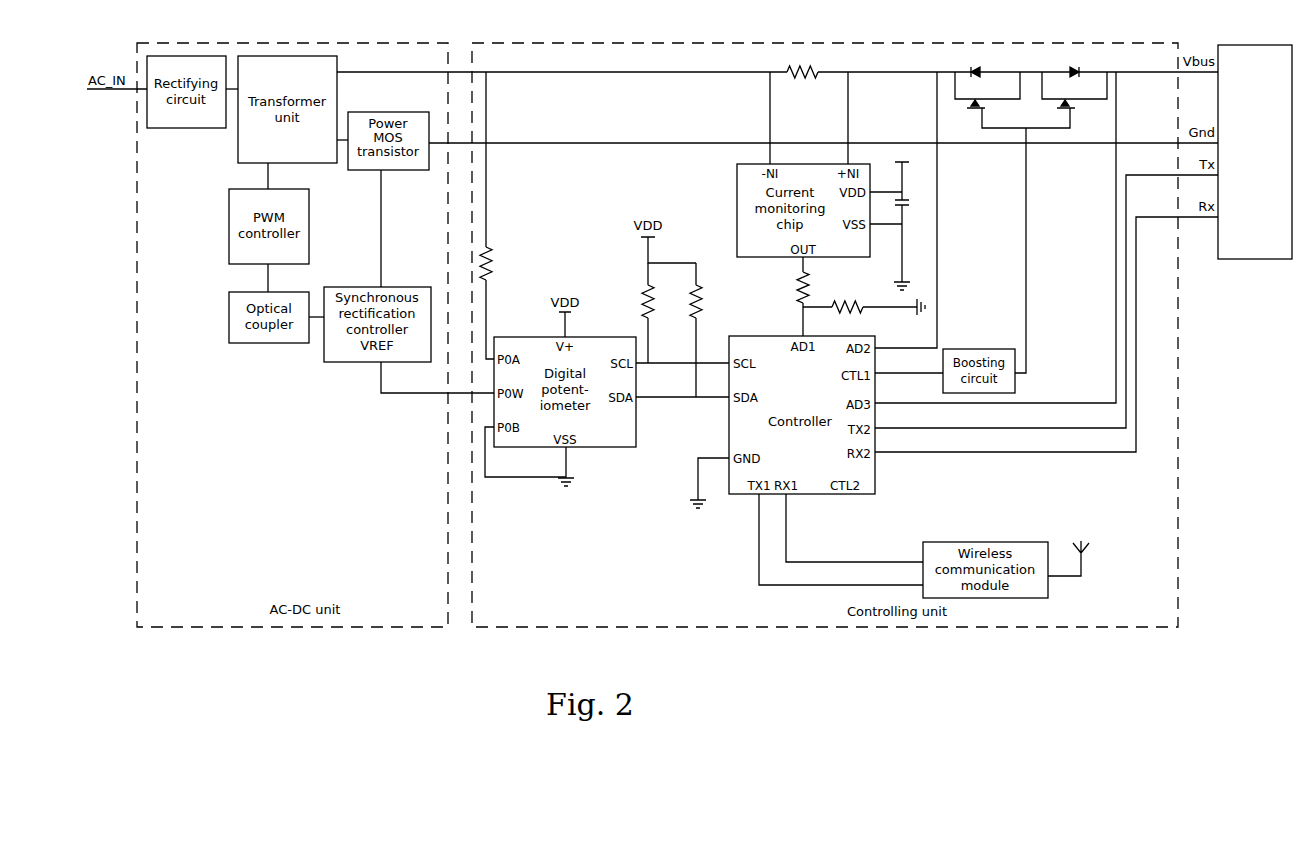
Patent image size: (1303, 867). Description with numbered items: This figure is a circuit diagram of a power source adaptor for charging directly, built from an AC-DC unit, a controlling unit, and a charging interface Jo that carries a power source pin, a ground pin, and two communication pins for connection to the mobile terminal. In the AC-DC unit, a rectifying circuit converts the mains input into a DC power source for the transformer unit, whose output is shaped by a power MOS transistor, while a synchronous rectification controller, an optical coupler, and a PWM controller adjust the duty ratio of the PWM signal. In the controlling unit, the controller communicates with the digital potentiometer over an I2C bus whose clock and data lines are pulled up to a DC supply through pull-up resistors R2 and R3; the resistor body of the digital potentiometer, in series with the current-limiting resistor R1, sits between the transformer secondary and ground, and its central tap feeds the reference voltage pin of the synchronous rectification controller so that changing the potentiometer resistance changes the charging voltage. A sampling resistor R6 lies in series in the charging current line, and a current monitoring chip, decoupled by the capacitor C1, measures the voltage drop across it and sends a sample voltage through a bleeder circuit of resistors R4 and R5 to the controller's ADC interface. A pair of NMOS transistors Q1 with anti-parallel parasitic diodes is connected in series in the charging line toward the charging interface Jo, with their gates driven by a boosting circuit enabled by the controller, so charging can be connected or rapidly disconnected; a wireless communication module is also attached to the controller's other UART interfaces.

The current-limiting resistor R1 is at (496, 215).
The pull-up resistor R2 is at (637, 313).
The pull-up resistor R3 is at (706, 330).
The bleeder resistor R4 is at (793, 296).
The bleeder resistor R5 is at (864, 299).
The sampling resistor R6 is at (802, 63).
The capacitor C1 is at (909, 218).
The pair of NMOS transistors Q1 is at (1031, 89).
The charging interface Jo is at (1255, 152).